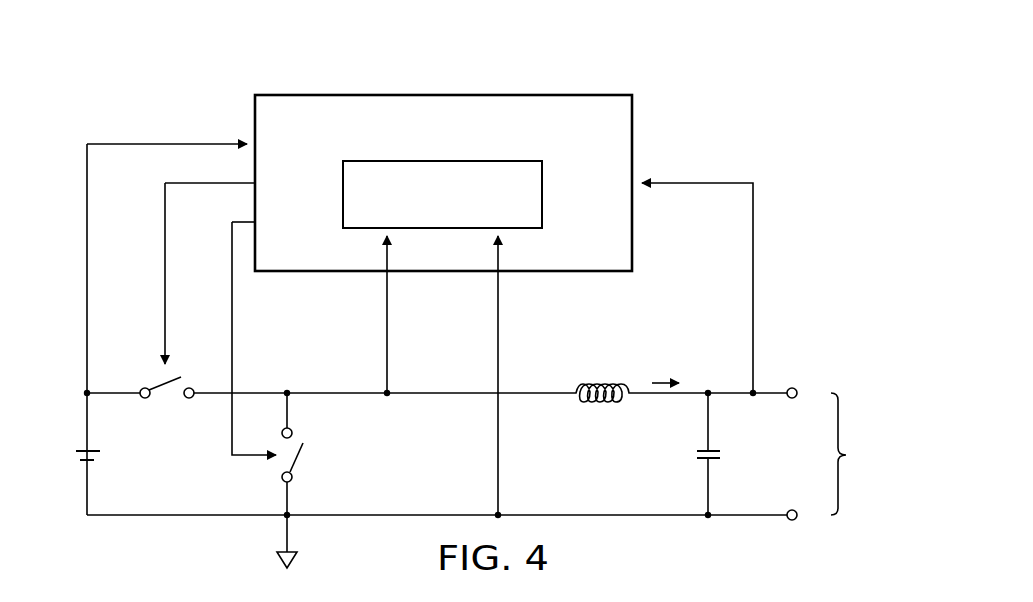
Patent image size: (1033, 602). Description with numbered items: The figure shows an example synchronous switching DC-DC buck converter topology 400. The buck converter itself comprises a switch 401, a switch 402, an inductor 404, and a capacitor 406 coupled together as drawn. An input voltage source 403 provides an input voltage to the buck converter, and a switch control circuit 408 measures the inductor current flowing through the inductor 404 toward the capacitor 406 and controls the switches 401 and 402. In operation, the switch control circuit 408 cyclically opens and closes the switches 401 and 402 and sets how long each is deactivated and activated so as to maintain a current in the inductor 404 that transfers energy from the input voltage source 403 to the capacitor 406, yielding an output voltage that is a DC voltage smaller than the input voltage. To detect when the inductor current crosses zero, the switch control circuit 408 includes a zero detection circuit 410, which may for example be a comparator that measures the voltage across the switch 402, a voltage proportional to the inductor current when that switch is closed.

The synchronous switching DC-DC buck converter topology 400 is at (737, 72).
The switch 401 is at (155, 387).
The switch 402 is at (294, 454).
The input voltage source 403 is at (75, 453).
The inductor 404 is at (603, 383).
The capacitor 406 is at (722, 453).
The switch control circuit 408 is at (442, 95).
The zero detection circuit 410 is at (542, 196).